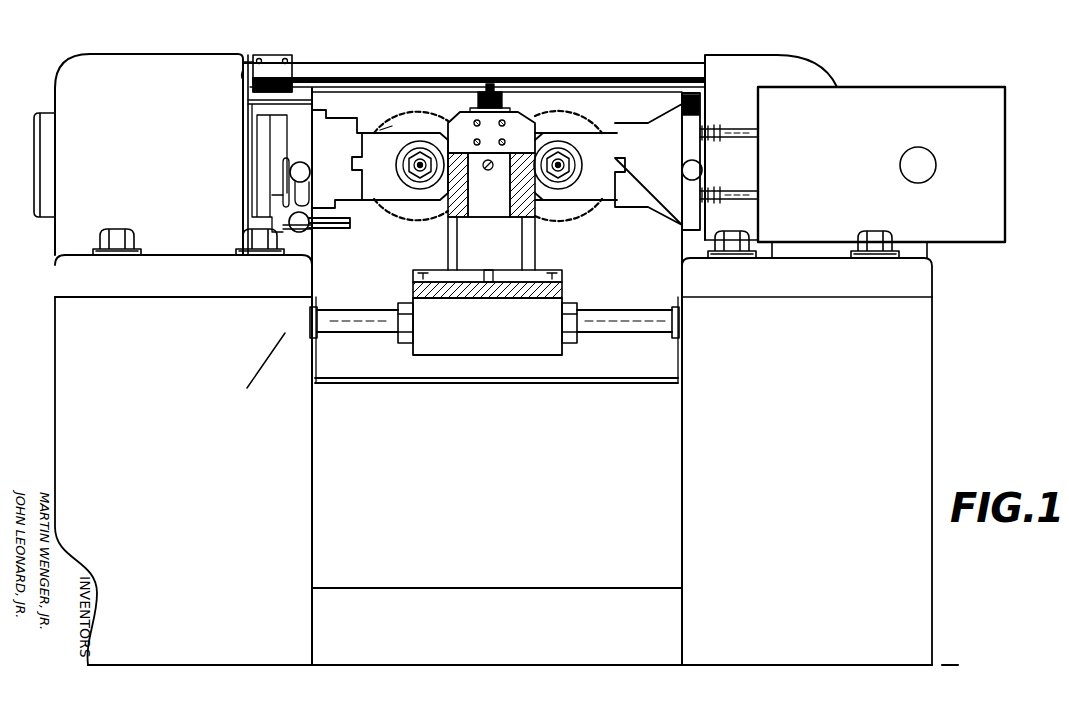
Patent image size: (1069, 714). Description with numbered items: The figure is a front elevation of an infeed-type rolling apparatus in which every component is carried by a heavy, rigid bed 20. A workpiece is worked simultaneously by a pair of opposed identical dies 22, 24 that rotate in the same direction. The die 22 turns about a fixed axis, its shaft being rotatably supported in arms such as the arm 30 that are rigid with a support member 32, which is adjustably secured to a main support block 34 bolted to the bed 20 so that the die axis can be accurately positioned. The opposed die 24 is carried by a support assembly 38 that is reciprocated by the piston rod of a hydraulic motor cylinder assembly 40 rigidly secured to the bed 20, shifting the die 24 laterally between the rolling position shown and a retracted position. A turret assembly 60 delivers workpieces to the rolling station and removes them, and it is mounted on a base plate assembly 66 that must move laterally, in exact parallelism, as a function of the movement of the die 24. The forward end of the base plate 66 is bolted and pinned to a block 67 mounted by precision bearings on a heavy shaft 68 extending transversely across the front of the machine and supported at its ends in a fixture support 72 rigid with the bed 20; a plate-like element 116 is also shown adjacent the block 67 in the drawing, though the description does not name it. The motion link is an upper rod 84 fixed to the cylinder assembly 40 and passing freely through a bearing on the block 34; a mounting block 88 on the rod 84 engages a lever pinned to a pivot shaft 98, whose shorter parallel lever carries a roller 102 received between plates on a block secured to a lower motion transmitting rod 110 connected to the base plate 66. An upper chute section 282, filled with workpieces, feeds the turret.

The bed 20 is at (70, 297).
The die 22 is at (398, 114).
The die 24 is at (576, 113).
The upper chute section 282 is at (460, 112).
The arm 30 is at (353, 201).
The support member 32 is at (353, 120).
The main support block 34 is at (240, 36).
The support assembly 38 is at (650, 121).
The hydraulic motor cylinder assembly 40 is at (797, 36).
The turret assembly 60 is at (500, 112).
The base plate assembly 66 is at (565, 286).
The block 67 is at (491, 334).
The shaft 68 is at (641, 336).
The fixture support 72 is at (393, 393).
The upper rod 84 is at (474, 62).
The mounting block 88 is at (283, 55).
The pivot shaft 98 is at (312, 234).
The roller 102 is at (305, 165).
The lower motion transmitting rod 110 is at (340, 228).
The mounting plate 116 is at (420, 272).